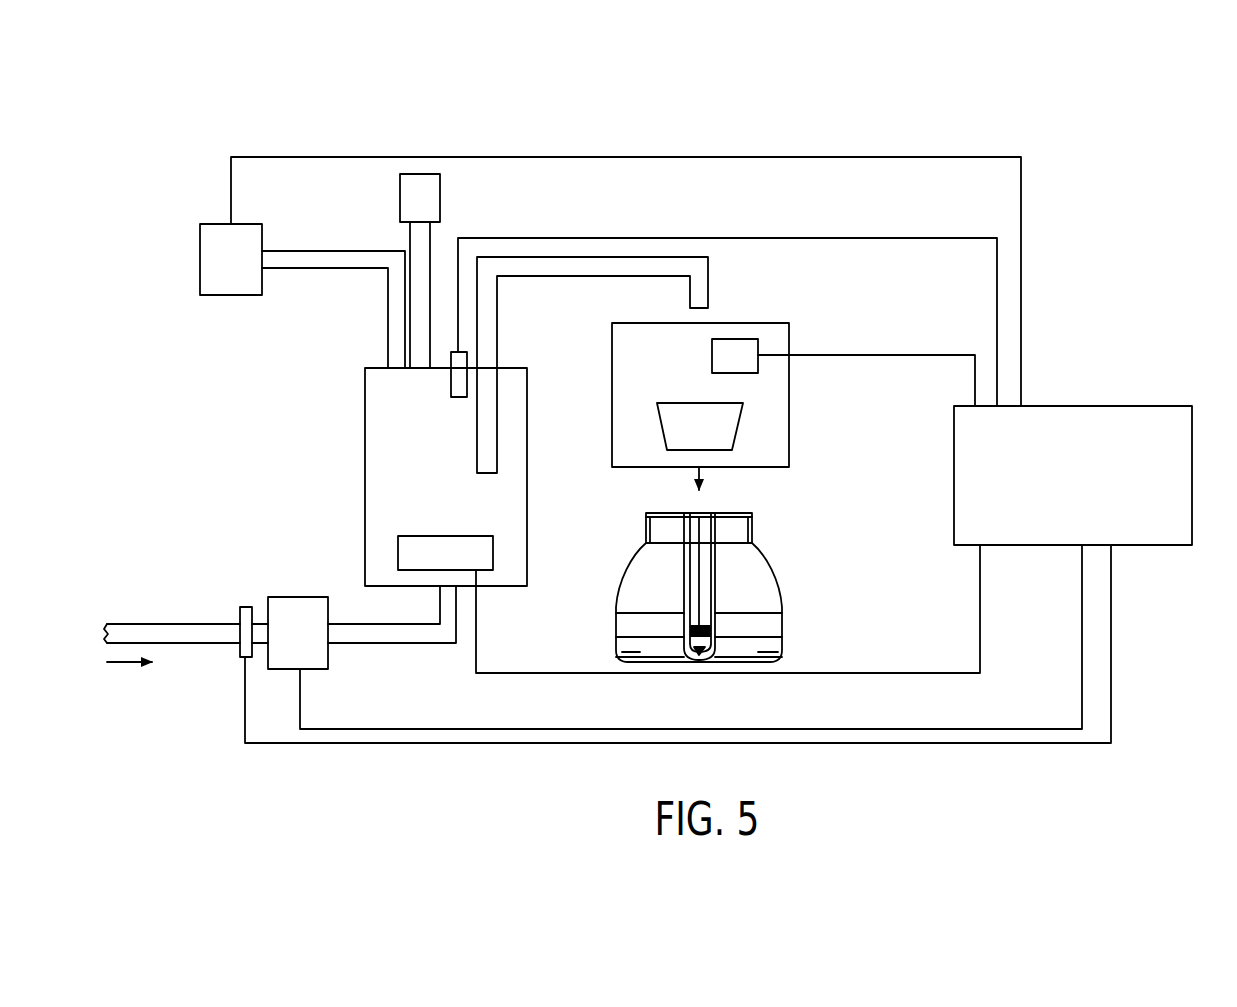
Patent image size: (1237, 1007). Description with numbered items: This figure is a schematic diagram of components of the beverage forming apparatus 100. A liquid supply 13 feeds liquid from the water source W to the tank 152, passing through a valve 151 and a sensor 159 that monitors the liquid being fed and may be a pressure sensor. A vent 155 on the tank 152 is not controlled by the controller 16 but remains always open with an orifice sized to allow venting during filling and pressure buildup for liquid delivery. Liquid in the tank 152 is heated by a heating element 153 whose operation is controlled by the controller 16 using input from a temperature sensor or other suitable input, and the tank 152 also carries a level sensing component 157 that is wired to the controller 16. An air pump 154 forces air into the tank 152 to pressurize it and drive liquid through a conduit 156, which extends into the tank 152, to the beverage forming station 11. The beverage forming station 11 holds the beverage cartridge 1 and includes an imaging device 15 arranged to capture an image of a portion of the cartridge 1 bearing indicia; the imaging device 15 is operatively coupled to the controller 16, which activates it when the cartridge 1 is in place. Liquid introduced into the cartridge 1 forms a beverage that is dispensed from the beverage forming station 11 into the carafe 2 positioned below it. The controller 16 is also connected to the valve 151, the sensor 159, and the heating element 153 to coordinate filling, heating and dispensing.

The beverage forming apparatus 100 is at (203, 134).
The liquid supply 13 is at (226, 498).
The air pump 154 is at (221, 265).
The vent 155 is at (420, 205).
The tank 152 is at (507, 491).
The conduit 156 is at (487, 325).
The water level sensor 157 is at (458, 380).
The heating element 153 is at (438, 548).
The valve 151 is at (300, 614).
The sensor 159 is at (245, 617).
The water source W is at (217, 635).
The beverage forming station 11 is at (773, 426).
The imaging device 15 is at (749, 348).
The beverage cartridge 1 is at (687, 426).
The carafe 2 is at (753, 575).
The controller 16 is at (1172, 477).